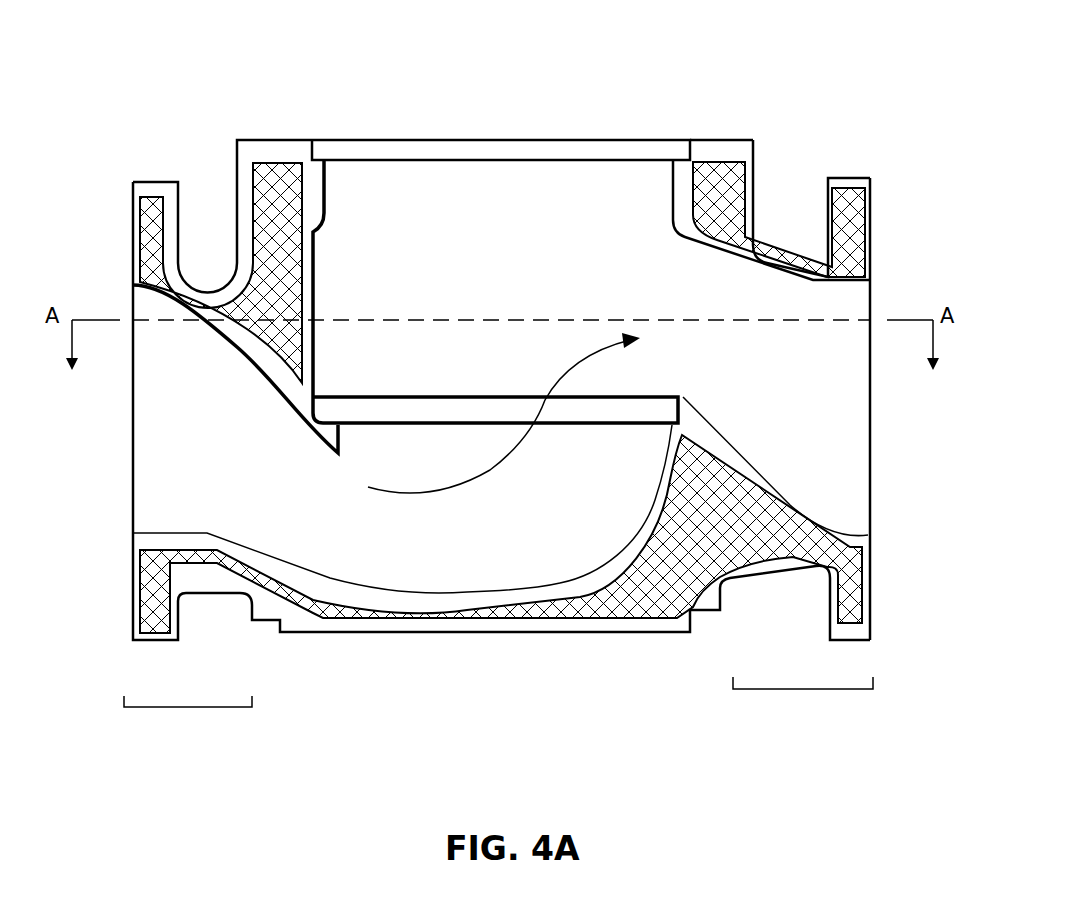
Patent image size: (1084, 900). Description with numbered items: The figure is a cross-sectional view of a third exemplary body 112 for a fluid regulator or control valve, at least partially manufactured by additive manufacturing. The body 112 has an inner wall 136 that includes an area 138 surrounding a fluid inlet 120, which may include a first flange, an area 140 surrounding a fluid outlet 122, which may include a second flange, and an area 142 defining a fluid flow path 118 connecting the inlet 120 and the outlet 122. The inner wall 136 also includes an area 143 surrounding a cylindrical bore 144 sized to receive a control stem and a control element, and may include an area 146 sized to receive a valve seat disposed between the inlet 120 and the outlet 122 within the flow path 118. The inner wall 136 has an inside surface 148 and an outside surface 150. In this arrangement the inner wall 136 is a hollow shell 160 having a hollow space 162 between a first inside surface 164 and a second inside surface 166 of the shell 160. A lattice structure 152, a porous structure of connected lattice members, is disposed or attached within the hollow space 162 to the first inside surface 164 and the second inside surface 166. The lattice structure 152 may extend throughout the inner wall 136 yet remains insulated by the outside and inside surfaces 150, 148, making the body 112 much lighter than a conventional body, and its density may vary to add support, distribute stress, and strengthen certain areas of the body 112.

The body 112 is at (103, 125).
The fluid flow path 118 is at (504, 413).
The fluid inlet 120 is at (132, 436).
The fluid outlet 122 is at (872, 417).
The inner wall 136 is at (244, 186).
The area surrounding the fluid inlet 138 is at (188, 723).
The area surrounding the fluid outlet 140 is at (803, 697).
The area defining the fluid flow path 142 is at (582, 622).
The area surrounding the cylindrical bore 143 is at (274, 175).
The cylindrical bore 144 is at (315, 243).
The area sized to receive a valve seat 146 is at (682, 396).
The inside surface 148 is at (400, 590).
The outside surface 150 is at (418, 613).
The lattice structure 152 is at (744, 272).
The hollow shell 160 is at (721, 124).
The hollow space 162 is at (735, 147).
The first inside surface 164 is at (729, 193).
The second inside surface 166 is at (702, 210).